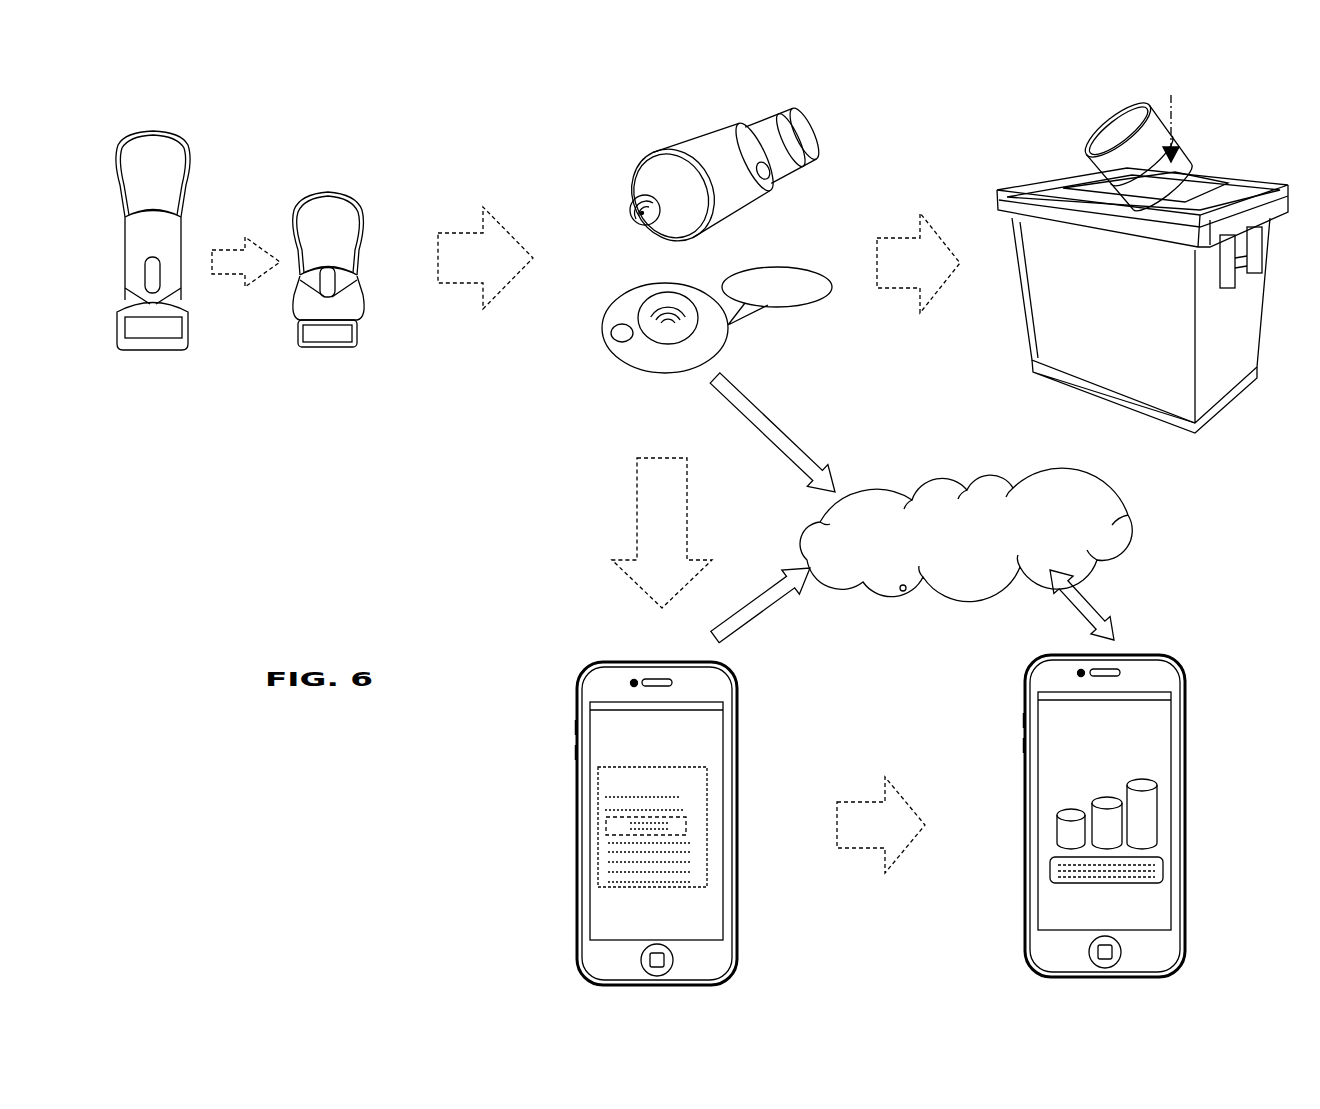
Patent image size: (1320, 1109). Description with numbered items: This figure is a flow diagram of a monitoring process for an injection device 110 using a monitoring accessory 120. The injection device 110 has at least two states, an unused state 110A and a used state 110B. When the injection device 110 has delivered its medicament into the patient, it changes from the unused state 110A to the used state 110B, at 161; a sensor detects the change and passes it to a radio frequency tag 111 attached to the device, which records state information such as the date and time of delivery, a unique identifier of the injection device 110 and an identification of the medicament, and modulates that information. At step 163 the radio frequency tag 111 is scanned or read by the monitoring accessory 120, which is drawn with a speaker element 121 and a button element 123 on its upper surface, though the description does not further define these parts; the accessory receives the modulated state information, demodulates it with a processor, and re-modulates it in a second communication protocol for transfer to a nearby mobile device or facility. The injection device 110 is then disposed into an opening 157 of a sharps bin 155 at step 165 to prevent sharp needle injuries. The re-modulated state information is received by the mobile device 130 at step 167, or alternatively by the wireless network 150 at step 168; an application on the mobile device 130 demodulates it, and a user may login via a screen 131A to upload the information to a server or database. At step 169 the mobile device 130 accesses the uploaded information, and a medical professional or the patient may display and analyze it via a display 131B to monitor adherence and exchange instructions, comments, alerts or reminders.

The injection device 110 is at (125, 136).
The unused state 110A is at (184, 136).
The used state 110B is at (354, 197).
The radio frequency tag 111 is at (630, 210).
The monitoring accessory 120 is at (696, 335).
The speaker 121 is at (642, 304).
The button 123 is at (617, 340).
The mobile device 130 is at (930, 820).
The screen 131A is at (700, 780).
The display 131B is at (1157, 760).
The wireless network 150 is at (1118, 500).
The sharps bin 155 is at (1129, 264).
The opening 157 is at (1189, 196).
The state change step 161 is at (263, 276).
The scanning step 163 is at (473, 282).
The disposal step 165 is at (907, 290).
The mobile device receiving step 167 is at (637, 531).
The wireless network receiving step 168 is at (790, 465).
The access step 169 is at (873, 853).